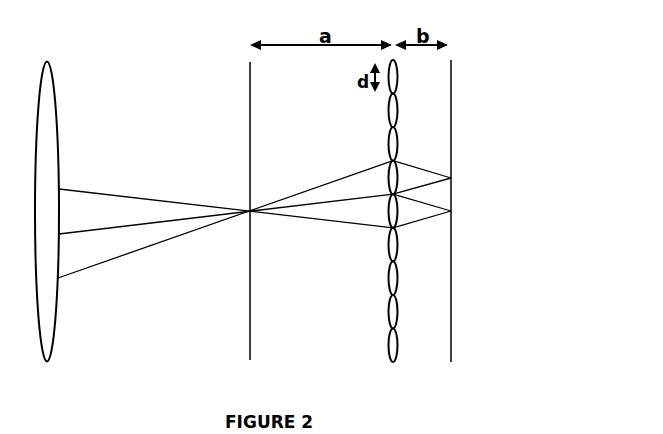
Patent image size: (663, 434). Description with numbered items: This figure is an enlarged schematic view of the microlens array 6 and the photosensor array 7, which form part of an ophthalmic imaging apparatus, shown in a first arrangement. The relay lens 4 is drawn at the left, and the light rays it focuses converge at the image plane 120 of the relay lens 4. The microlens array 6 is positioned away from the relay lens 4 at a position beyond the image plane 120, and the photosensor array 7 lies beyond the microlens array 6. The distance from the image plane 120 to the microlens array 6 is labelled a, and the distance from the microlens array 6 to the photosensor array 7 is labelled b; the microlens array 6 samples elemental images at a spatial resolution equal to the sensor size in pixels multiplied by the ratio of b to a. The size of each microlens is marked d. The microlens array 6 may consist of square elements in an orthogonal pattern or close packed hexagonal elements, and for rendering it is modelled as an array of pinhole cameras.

The relay lens 4 is at (33, 296).
The image plane 120 is at (243, 312).
The microlens array 6 is at (382, 318).
The photosensor array 7 is at (460, 321).